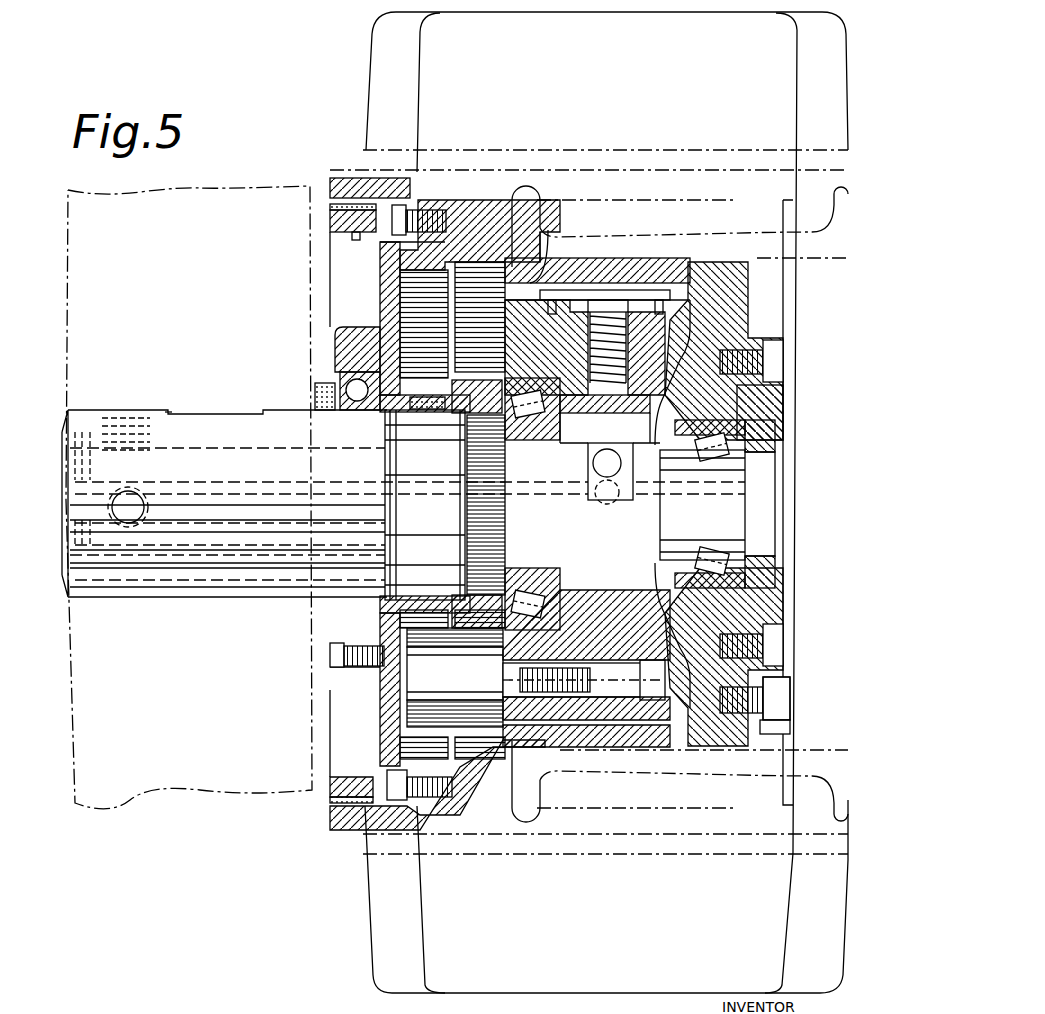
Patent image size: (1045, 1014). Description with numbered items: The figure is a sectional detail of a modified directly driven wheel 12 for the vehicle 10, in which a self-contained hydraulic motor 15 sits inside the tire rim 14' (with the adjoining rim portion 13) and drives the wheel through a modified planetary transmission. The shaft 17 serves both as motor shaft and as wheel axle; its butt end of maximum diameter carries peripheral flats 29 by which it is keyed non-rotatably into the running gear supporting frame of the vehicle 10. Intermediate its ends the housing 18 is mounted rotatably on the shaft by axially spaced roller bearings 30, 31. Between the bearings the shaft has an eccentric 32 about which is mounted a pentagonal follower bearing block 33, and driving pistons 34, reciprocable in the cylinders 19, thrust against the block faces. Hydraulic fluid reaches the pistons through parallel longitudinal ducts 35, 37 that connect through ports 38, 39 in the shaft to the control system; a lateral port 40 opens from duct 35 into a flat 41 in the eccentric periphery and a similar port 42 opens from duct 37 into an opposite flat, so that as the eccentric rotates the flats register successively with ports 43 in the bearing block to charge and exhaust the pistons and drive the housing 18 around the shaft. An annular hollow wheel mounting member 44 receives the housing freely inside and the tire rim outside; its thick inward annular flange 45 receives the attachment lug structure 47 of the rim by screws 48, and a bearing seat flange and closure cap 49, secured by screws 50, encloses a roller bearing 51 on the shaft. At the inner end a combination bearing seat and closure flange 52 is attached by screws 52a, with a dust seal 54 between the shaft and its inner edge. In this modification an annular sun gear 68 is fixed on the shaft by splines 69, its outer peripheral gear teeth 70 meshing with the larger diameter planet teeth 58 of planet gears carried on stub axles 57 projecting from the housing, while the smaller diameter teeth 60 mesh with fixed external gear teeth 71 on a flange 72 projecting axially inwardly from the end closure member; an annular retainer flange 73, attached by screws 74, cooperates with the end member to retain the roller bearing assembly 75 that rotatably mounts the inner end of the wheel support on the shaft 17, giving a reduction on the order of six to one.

The vehicle 10 is at (243, 780).
The wheel 12 is at (358, 949).
The wheel rim 13 is at (375, 889).
The tire rim 14' is at (678, 540).
The hydraulic motor 15 is at (660, 296).
The shaft 17 is at (218, 575).
The housing 18 is at (495, 340).
The cylinders 19 is at (518, 350).
The peripheral flats 29 is at (170, 410).
The roller bearing 30 is at (530, 405).
The roller bearing 31 is at (694, 450).
The eccentric 32 is at (648, 503).
The follower bearing block 33 is at (712, 510).
The driving pistons 34 is at (578, 345).
The duct 35 is at (188, 448).
The duct 37 is at (236, 482).
The port 38 is at (136, 412).
The port 39 is at (135, 495).
The lateral port 40 is at (592, 462).
The flat 41 is at (612, 478).
The port 42 is at (615, 492).
The ports 43 is at (600, 413).
The wheel mounting member 44 is at (636, 270).
The annular flange 45 is at (735, 285).
The attachment lug structure 47 is at (772, 727).
The screws 48 is at (773, 694).
The bearing seat flange and closure cap 49 is at (772, 393).
The screws 50 is at (773, 360).
The roller bearing 51 is at (755, 430).
The combination bearing seat and closure flange 52 is at (380, 696).
The screws 52a is at (395, 770).
The dust seal 54 is at (320, 392).
The stub axles 57 is at (462, 682).
The larger diameter gear teeth 58 is at (476, 780).
The smaller diameter gear teeth 60 is at (410, 290).
The annular sun gear 68 is at (470, 400).
The splines 69 is at (478, 452).
The outer peripheral gear teeth 70 is at (455, 408).
The fixed external gear teeth 71 is at (418, 400).
The flange 72 is at (437, 418).
The annular retainer flange 73 is at (345, 340).
The screws 74 is at (352, 654).
The roller bearing assembly 75 is at (352, 384).